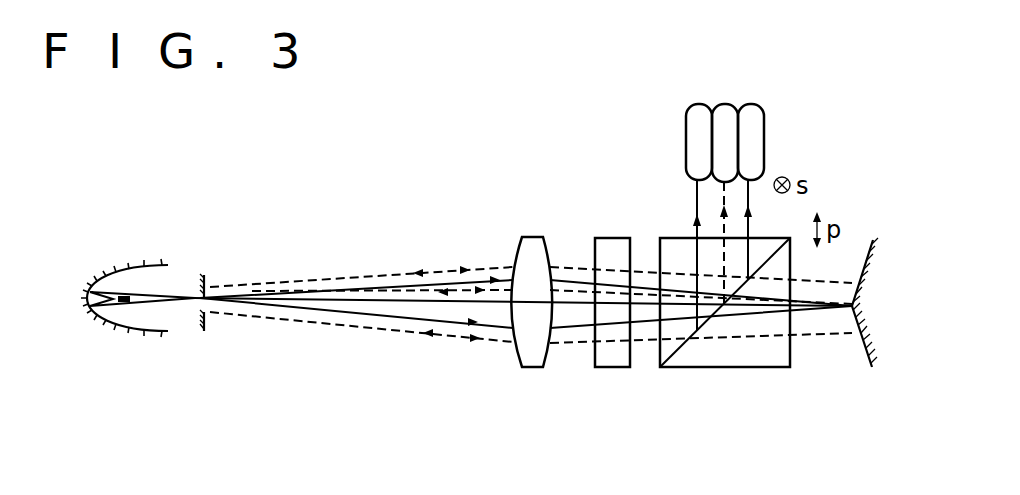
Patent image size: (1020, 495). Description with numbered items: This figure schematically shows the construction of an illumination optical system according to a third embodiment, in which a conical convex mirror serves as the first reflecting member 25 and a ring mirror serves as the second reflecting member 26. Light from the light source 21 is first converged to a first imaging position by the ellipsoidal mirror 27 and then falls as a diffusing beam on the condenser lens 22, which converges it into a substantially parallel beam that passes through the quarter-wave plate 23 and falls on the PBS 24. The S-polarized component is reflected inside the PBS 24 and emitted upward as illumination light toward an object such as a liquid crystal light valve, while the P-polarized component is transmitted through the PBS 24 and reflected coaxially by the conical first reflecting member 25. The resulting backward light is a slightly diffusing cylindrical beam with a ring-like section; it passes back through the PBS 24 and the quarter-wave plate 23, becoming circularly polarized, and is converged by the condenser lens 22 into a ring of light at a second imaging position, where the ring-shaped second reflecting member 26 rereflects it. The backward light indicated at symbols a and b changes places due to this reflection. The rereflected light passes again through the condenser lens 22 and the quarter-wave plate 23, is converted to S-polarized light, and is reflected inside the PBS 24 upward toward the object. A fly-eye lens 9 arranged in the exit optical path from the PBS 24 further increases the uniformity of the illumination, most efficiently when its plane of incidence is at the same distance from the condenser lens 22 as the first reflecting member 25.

The fly-eye lens 9 is at (764, 128).
The light source 21 is at (111, 310).
The condenser lens 22 is at (530, 368).
The quarter-wave plate 23 is at (613, 368).
The PBS 24 is at (700, 368).
The first reflecting member 25 is at (867, 357).
The second reflecting member 26 is at (208, 280).
The ellipsoidal mirror 27 is at (168, 335).
The backward light a is at (300, 290).
The backward light b is at (353, 278).